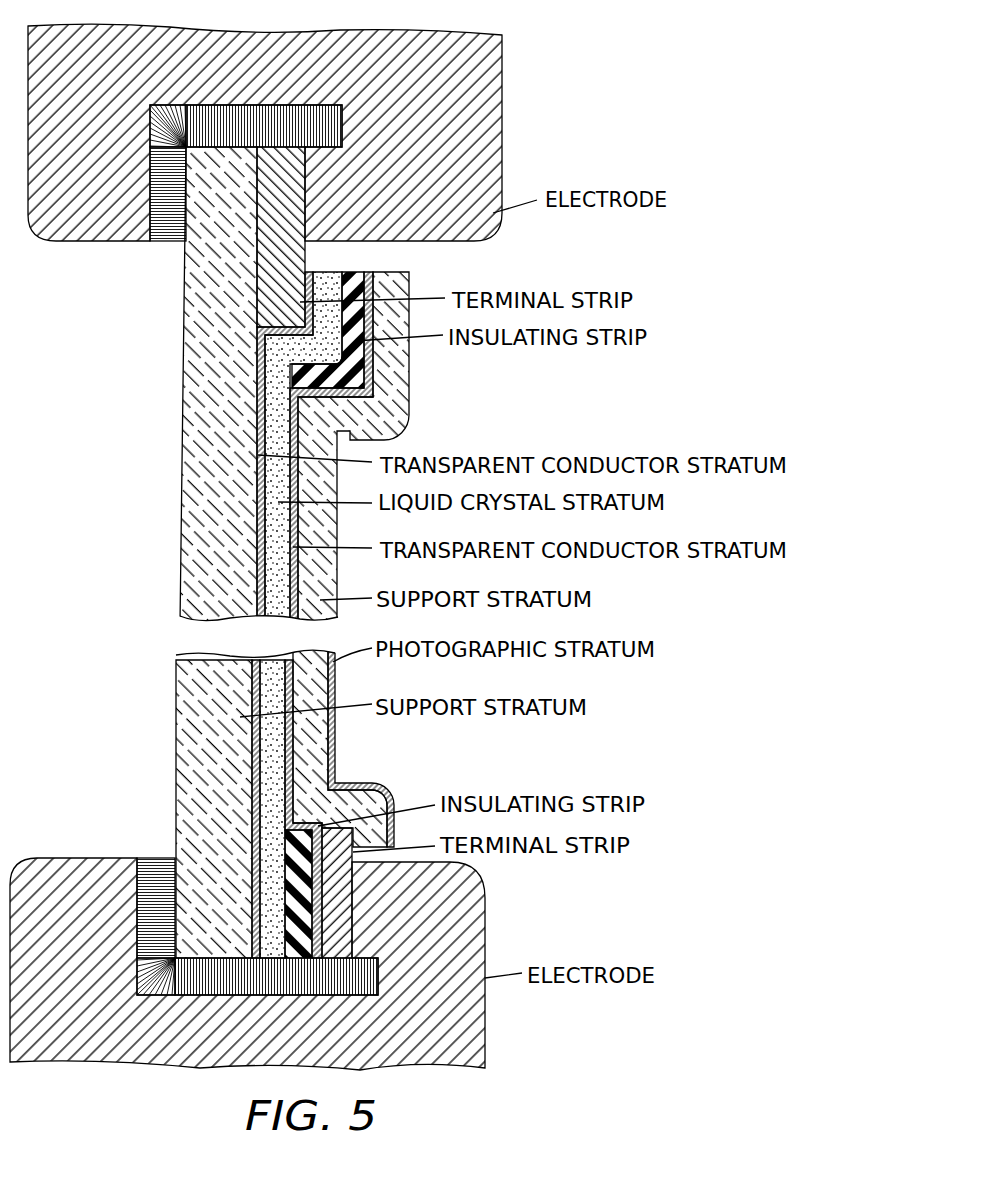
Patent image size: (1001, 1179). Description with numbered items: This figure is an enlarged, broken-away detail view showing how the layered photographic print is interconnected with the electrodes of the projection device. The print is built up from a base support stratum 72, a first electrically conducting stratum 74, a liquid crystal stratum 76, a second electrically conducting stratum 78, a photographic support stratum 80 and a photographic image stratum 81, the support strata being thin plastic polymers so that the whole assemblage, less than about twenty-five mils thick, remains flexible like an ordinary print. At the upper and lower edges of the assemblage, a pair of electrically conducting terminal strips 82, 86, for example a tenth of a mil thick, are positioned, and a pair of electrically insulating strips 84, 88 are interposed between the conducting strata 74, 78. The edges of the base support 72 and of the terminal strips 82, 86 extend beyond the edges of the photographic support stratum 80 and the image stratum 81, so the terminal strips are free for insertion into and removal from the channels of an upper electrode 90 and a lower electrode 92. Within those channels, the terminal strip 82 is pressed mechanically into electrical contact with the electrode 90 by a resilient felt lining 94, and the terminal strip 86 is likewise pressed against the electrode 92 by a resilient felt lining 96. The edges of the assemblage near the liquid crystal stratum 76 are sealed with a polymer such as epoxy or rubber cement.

The base support stratum 72 is at (200, 393).
The first electrically conducting stratum 74 is at (257, 427).
The liquid crystal stratum 76 is at (272, 476).
The second electrically conducting stratum 78 is at (295, 527).
The photographic support stratum 80 is at (308, 611).
The photographic image stratum 81 is at (330, 685).
The terminal strip 82 is at (268, 271).
The insulating strip 84 is at (300, 373).
The terminal strip 86 is at (333, 890).
The insulating strip 88 is at (283, 848).
The upper electrode 90 is at (68, 233).
The lower electrode 92 is at (41, 865).
The resilient felt lining 94 is at (157, 241).
The resilient felt lining 96 is at (140, 880).